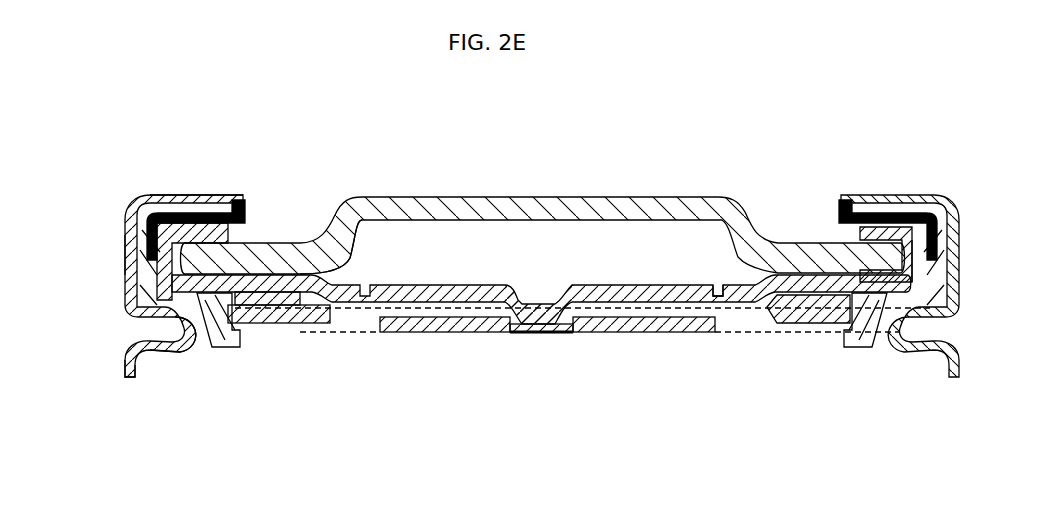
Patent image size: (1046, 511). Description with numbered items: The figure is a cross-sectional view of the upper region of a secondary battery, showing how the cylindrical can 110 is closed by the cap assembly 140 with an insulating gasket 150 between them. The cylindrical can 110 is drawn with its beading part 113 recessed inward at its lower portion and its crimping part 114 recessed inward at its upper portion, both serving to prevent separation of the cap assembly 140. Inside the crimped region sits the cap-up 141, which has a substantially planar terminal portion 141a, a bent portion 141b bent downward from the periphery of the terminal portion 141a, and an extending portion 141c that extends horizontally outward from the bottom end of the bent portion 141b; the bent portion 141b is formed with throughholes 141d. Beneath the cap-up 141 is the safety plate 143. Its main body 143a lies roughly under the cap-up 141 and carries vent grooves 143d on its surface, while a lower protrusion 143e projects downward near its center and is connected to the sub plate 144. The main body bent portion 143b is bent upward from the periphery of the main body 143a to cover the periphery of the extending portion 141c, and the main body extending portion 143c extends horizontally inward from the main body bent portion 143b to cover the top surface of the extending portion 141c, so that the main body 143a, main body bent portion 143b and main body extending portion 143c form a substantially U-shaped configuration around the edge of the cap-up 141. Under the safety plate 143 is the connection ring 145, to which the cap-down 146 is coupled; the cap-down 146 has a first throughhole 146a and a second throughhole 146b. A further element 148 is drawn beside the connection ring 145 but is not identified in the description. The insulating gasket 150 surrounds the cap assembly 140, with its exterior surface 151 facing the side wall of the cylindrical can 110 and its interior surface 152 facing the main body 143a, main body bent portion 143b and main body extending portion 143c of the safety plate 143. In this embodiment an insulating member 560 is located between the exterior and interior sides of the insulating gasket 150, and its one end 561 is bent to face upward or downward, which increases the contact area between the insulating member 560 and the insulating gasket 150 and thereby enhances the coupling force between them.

The cylindrical can 110 is at (129, 380).
The beading part 113 is at (153, 327).
The crimping part 114 is at (182, 198).
The cap assembly 140 is at (733, 158).
The cap-up 141 is at (392, 120).
The terminal portion 141a is at (590, 210).
The bent portion 141b is at (350, 240).
The extending portion 141c is at (310, 215).
The throughholes 141d is at (737, 240).
The safety plate 143 is at (943, 425).
The main body 143a is at (782, 296).
The main body bent portion 143b is at (913, 262).
The main body extending portion 143c is at (877, 240).
The vent grooves 143d is at (720, 292).
The lower protrusion 143e is at (555, 332).
The sub plate 144 is at (471, 333).
The connection ring 145 is at (270, 330).
The cap-down 146 is at (402, 333).
The first throughhole 146a is at (512, 333).
The second throughhole 146b is at (333, 325).
The wedge member 148 is at (218, 348).
The insulating gasket 150 is at (150, 282).
The exterior surface 151 is at (132, 256).
The interior surface 152 is at (130, 300).
The insulating member 560 is at (218, 198).
The one end 561 is at (262, 205).